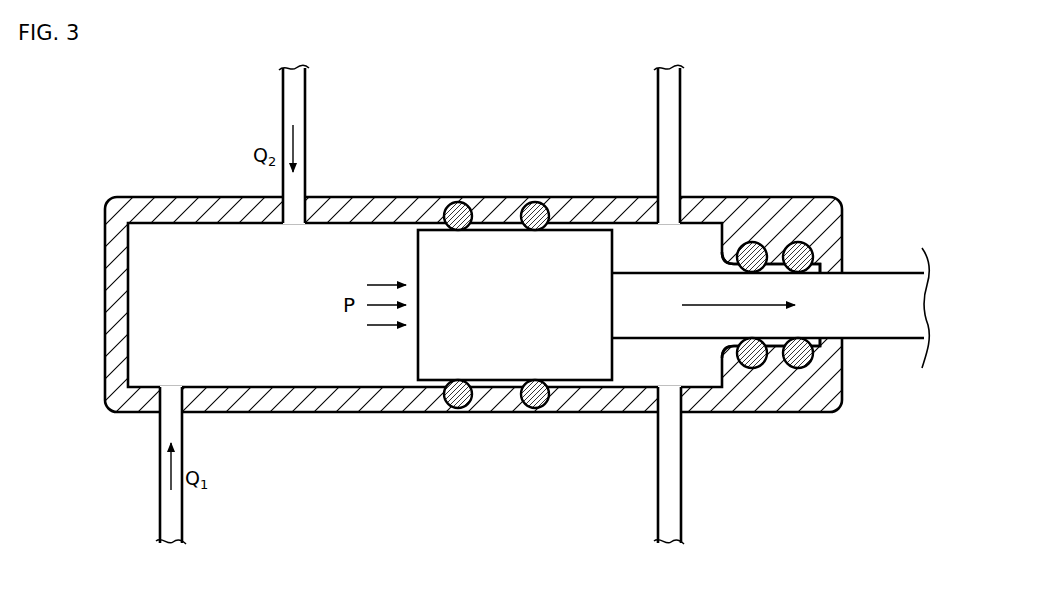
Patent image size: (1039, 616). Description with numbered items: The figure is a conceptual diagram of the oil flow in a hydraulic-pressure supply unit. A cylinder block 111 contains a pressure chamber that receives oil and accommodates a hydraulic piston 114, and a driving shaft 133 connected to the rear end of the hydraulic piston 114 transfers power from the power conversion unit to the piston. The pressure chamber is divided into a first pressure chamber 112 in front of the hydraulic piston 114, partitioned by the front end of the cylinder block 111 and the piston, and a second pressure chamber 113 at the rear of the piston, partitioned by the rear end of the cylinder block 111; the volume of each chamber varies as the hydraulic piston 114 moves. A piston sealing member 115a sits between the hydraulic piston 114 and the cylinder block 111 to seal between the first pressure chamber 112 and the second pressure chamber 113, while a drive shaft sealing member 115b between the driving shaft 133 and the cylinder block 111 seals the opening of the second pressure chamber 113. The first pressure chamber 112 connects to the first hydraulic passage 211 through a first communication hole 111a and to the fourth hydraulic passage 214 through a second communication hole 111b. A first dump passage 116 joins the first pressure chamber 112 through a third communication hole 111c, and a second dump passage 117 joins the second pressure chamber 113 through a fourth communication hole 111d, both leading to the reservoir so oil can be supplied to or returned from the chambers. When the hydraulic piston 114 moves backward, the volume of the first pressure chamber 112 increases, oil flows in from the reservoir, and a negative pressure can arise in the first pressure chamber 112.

The cylinder block 111 is at (481, 311).
The first communication hole 111a is at (166, 410).
The second communication hole 111b is at (664, 410).
The third communication hole 111c is at (308, 202).
The fourth communication hole 111d is at (685, 202).
The first pressure chamber 112 is at (155, 285).
The second pressure chamber 113 is at (698, 360).
The hydraulic piston 114 is at (585, 245).
The piston sealing member 115a is at (460, 203).
The drive shaft sealing member 115b is at (798, 242).
The first dump passage 116 is at (291, 113).
The second dump passage 117 is at (666, 112).
The driving shaft 133 is at (884, 286).
The first hydraulic passage 211 is at (164, 510).
The fourth hydraulic passage 214 is at (664, 510).